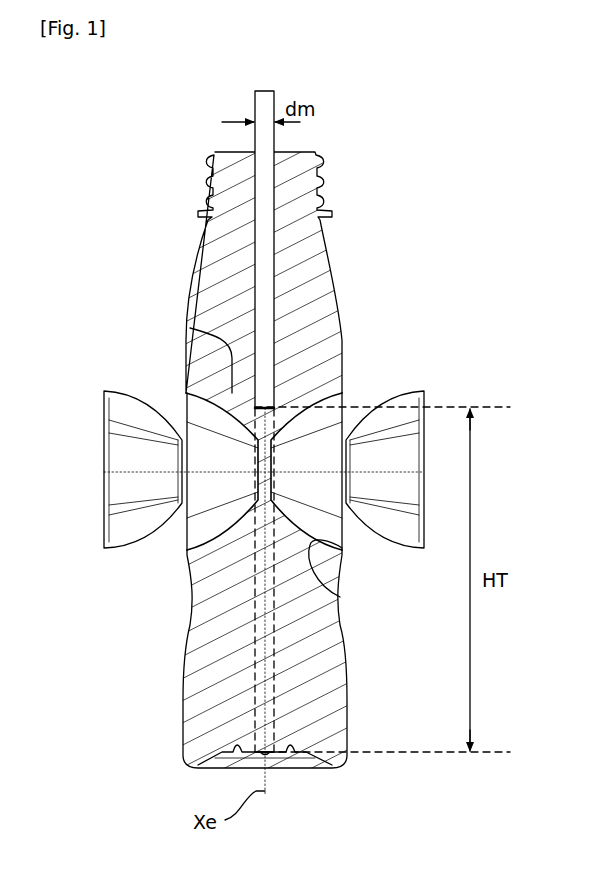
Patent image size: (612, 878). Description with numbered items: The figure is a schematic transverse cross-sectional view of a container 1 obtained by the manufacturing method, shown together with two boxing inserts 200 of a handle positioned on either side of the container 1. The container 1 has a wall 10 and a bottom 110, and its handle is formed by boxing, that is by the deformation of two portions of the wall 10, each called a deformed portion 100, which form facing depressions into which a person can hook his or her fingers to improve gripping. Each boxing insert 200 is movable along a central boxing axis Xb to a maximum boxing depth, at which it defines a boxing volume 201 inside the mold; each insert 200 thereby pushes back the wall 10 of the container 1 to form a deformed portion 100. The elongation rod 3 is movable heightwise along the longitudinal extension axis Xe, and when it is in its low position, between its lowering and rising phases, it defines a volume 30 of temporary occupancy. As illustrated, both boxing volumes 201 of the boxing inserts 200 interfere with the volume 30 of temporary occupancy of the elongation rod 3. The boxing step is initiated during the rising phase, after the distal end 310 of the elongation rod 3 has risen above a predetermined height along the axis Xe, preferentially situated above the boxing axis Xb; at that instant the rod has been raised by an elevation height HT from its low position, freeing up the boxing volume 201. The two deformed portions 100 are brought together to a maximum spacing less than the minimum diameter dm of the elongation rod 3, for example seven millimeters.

The container 1 is at (339, 142).
The elongation rod 3 is at (265, 262).
The wall 10 is at (345, 295).
The distal end 310 is at (276, 394).
The deformed portion 100 is at (215, 338).
The boxing volume 201 is at (222, 462).
The boxing insert 200 is at (150, 549).
The volume of temporary occupancy 30 is at (257, 668).
The bottom 110 is at (257, 765).